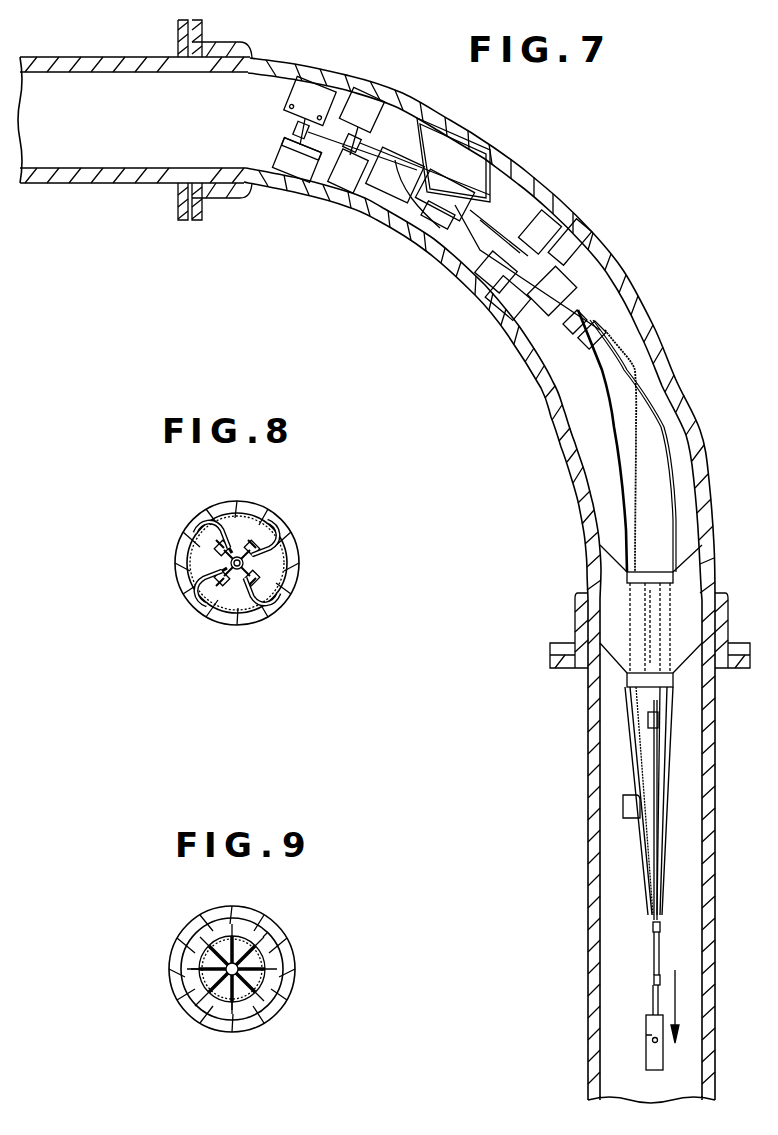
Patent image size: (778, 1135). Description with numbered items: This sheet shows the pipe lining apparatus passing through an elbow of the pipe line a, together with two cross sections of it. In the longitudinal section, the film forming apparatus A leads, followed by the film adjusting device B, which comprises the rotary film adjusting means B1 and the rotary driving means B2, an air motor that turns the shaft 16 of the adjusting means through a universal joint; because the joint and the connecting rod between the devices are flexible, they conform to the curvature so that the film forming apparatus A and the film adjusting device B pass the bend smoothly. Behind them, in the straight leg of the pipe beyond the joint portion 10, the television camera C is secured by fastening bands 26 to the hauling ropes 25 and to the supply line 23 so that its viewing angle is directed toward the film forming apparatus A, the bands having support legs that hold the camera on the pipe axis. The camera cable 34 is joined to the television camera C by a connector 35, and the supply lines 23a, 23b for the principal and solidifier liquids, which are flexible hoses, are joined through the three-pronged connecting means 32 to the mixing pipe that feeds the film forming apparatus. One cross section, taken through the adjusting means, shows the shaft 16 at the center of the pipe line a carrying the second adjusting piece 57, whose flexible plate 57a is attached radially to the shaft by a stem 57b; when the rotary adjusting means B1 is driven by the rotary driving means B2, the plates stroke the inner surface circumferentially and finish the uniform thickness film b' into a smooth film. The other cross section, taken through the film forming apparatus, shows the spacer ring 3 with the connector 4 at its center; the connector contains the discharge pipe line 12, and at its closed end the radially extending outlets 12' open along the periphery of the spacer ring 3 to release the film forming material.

In FIG. 7, the joint portion 10 is at (722, 612).
In FIG. 7, the hauling ropes 25 is at (672, 522).
In FIG. 7, the fastening bands 26 is at (673, 578).
In FIG. 7, the television camera C is at (640, 600).
In FIG. 7, the supply line 23 is at (628, 858).
In FIG. 7, the supply line for principal liquid 23a is at (640, 880).
In FIG. 7, the supply line for solidifier liquid 23b is at (650, 912).
In FIG. 7, the camera cable 34 is at (657, 790).
In FIG. 7, the connector 35 is at (657, 720).
In FIG. 7, the three-pronged connecting means 32 is at (620, 808).
In FIG. 7, the pipe line a is at (574, 221).
In FIG. 8, the pipe line a is at (285, 522).
In FIG. 9, the pipe line a is at (283, 938).
In FIG. 8, the uniform thickness film b' is at (255, 563).
In FIG. 7, the film forming apparatus A is at (536, 322).
In FIG. 9, the film forming apparatus A is at (258, 1020).
In FIG. 7, the film adjusting device B is at (365, 195).
In FIG. 7, the rotary film adjusting means B1 is at (282, 158).
In FIG. 8, the rotary film adjusting means B1 is at (243, 623).
In FIG. 7, the rotary driving means B2 is at (412, 232).
In FIG. 8, the shaft 16 is at (237, 556).
In FIG. 8, the second adjusting piece 57 is at (222, 620).
In FIG. 8, the flexible plate 57a is at (222, 515).
In FIG. 8, the stem 57b is at (210, 560).
In FIG. 9, the spacer ring 3 is at (252, 917).
In FIG. 9, the connector 4 is at (205, 1020).
In FIG. 9, the discharge pipe line 12 is at (256, 969).
In FIG. 9, the radially extending outlets 12' is at (187, 997).